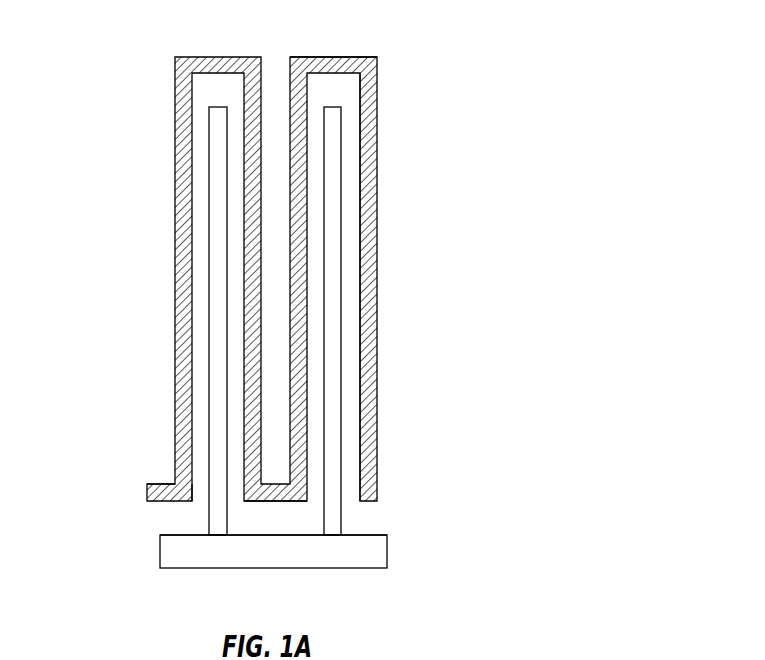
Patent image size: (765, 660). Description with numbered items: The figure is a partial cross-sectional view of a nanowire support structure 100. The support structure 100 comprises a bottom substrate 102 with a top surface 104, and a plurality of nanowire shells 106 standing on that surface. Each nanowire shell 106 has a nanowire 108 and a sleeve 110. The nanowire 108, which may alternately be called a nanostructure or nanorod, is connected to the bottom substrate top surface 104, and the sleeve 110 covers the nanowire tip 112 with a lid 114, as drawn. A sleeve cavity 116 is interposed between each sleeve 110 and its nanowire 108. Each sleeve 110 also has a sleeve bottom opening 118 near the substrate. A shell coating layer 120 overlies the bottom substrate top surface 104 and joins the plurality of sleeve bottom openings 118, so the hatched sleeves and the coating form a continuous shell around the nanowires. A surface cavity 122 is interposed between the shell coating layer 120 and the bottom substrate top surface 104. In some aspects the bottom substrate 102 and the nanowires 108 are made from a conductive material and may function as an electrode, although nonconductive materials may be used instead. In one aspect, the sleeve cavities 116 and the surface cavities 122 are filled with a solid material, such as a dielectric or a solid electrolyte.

The support structure 100 is at (450, 38).
The bottom substrate 102 is at (387, 552).
The top surface 104 is at (372, 526).
The nanowire shell 106 is at (422, 290).
The nanowire 108 is at (342, 258).
The sleeve 110 is at (377, 170).
The nanowire tip 112 is at (343, 99).
The lid 114 is at (337, 57).
The sleeve cavity 116 is at (352, 362).
The sleeve bottom opening 118 is at (190, 507).
The shell coating layer 120 is at (272, 483).
The surface cavity 122 is at (288, 515).